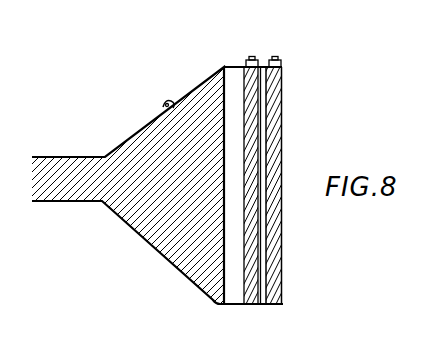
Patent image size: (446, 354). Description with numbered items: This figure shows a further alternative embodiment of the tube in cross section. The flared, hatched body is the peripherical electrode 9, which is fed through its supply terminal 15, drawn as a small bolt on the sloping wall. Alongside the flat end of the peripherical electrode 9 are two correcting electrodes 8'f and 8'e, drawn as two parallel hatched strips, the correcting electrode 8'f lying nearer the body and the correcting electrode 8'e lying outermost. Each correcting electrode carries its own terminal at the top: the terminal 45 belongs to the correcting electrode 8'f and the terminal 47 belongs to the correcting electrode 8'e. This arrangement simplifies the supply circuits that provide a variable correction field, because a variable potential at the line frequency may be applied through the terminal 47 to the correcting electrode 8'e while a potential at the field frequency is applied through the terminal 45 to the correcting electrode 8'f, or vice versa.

The peripherical electrode 9 is at (157, 246).
The supply terminal 15 is at (170, 99).
The terminal 45 is at (252, 57).
The terminal 47 is at (276, 57).
The correcting electrode 8'f is at (263, 204).
The correcting electrode 8'e is at (263, 204).